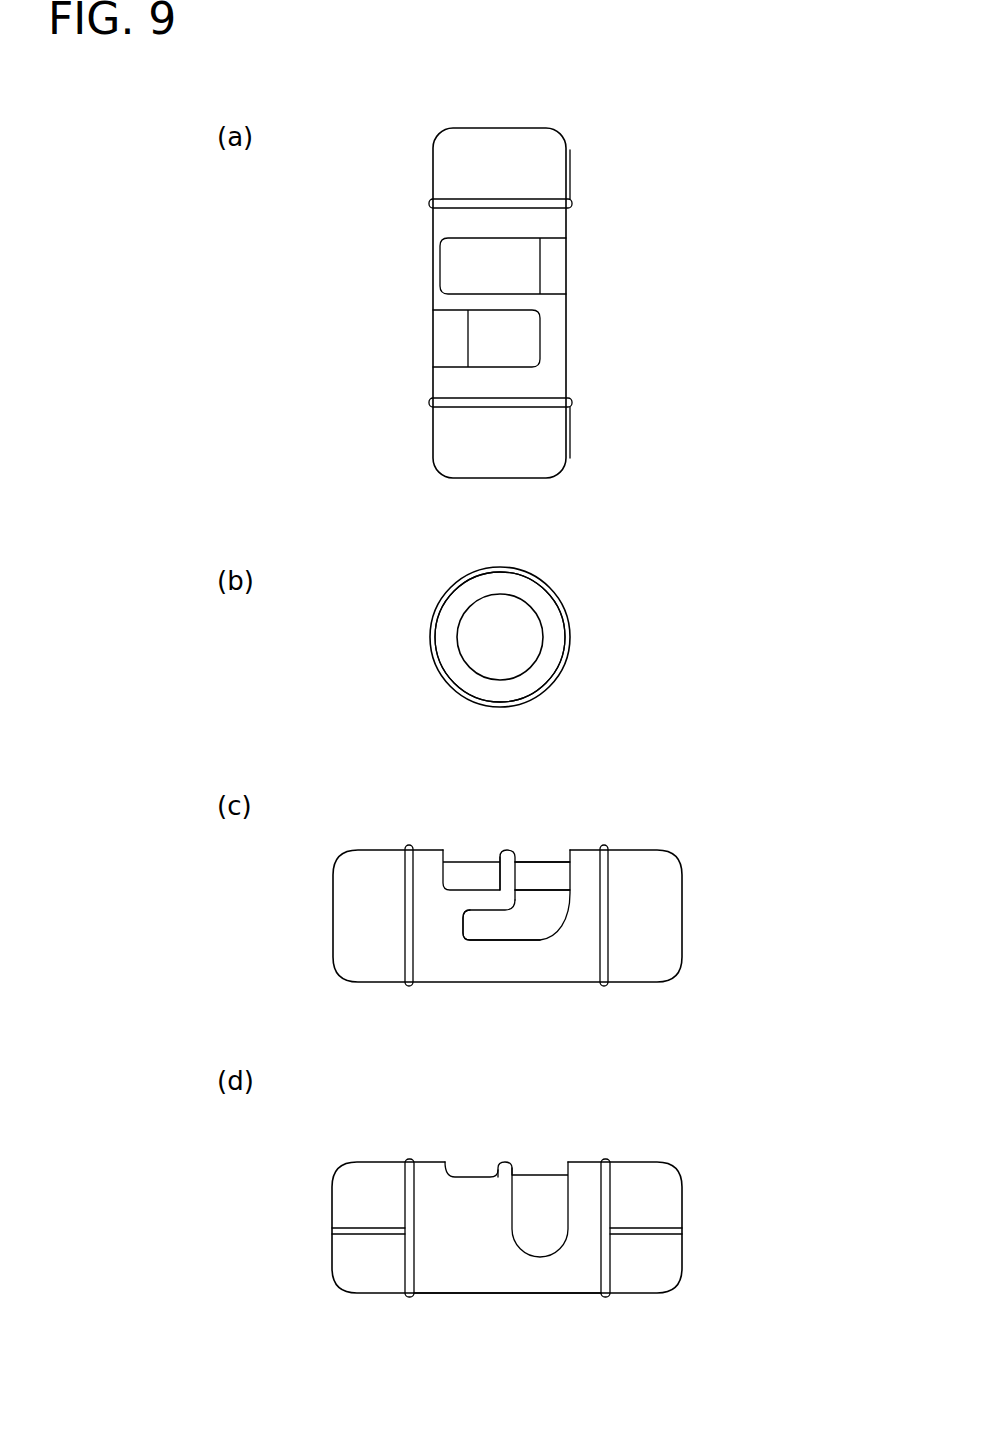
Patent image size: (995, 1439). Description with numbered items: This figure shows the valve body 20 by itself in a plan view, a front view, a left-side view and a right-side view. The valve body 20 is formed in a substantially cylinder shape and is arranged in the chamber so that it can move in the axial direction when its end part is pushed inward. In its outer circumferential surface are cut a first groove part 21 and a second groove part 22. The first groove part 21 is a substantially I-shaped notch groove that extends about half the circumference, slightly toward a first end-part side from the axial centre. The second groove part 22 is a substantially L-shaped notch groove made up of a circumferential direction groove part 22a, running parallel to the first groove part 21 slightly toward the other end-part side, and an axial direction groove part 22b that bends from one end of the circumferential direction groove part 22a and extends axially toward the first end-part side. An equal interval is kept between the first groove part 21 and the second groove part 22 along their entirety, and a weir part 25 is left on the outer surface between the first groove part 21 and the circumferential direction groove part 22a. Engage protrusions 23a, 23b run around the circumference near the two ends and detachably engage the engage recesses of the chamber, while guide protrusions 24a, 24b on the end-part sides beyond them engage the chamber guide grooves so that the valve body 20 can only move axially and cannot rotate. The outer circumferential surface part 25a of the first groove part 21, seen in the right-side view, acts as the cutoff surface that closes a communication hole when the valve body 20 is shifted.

The valve body 20 is at (595, 121).
The first groove part 21 is at (539, 266).
The second groove part 22 is at (447, 356).
The circumferential direction groove part 22a is at (482, 320).
The axial direction groove part 22b is at (488, 933).
The engage protrusion 23a is at (435, 200).
The engage protrusion 23b is at (431, 634).
The guide protrusion 24a is at (572, 178).
The guide protrusion 24b is at (574, 428).
The weir part 25 is at (493, 300).
The outer circumferential surface part 25a is at (473, 1283).